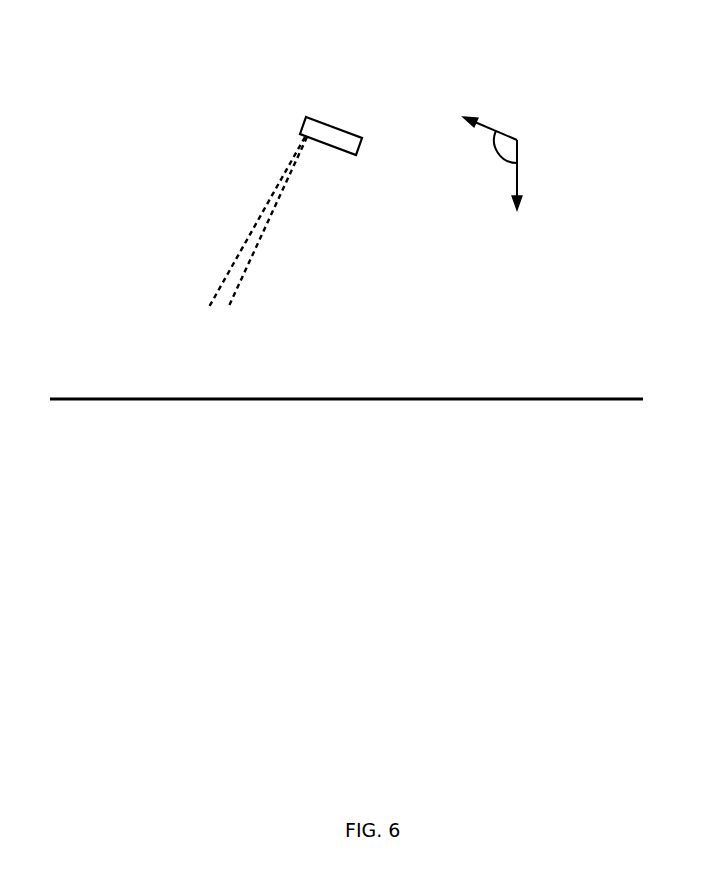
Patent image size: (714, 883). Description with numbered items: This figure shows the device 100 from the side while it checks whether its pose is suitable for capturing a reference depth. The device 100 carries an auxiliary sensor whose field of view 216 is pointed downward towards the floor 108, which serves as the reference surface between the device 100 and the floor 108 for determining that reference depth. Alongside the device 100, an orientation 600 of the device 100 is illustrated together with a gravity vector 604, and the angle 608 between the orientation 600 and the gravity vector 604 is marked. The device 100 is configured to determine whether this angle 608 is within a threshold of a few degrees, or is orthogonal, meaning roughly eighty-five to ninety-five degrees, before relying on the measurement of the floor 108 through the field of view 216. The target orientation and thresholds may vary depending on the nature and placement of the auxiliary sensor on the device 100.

The device 100 is at (327, 103).
The field of view 216 is at (260, 240).
The orientation 600 is at (488, 122).
The gravity vector 604 is at (520, 183).
The angle 608 is at (502, 158).
The floor 108 is at (382, 400).